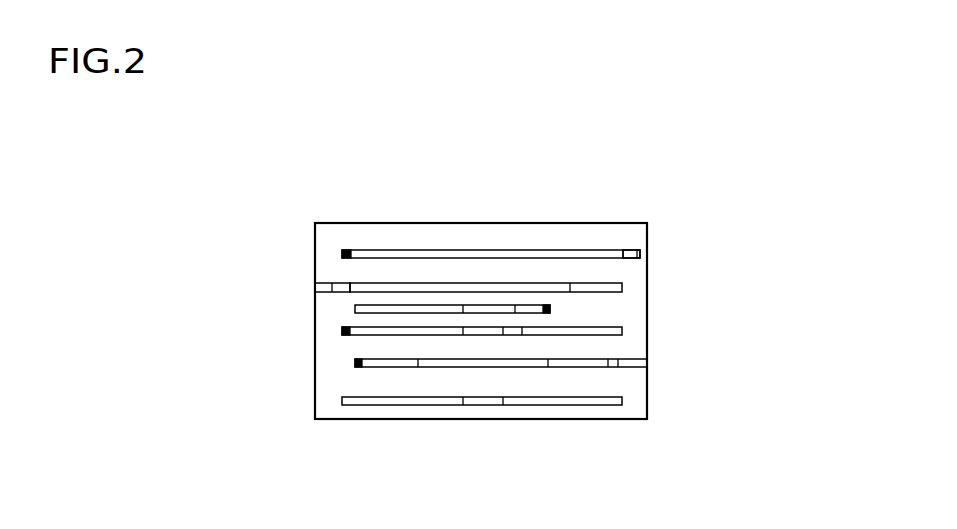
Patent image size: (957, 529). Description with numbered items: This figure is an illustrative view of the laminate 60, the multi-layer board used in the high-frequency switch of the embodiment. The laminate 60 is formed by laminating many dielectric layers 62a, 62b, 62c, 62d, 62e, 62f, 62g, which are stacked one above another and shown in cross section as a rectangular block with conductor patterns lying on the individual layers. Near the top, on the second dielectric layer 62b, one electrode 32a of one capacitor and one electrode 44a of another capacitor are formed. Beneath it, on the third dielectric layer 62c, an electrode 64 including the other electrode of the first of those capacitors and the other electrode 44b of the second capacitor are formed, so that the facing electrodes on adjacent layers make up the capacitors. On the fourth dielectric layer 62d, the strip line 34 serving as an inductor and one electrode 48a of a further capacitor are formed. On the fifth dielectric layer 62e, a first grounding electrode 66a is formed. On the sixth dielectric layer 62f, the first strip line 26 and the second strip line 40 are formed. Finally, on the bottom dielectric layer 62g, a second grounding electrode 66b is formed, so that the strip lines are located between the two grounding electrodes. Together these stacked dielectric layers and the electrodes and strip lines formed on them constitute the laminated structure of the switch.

The laminate 60 is at (336, 168).
The dielectric layer 62a is at (633, 237).
The second dielectric layer 62b is at (620, 271).
The third dielectric layer 62c is at (537, 297).
The fourth dielectric layer 62d is at (578, 348).
The fifth dielectric layer 62e is at (537, 320).
The sixth dielectric layer 62f is at (590, 390).
The bottom dielectric layer 62g is at (617, 411).
The electrode of the capacitor 44 44a is at (343, 253).
The other electrode of the capacitor 44 44b is at (317, 283).
The electrode of the capacitor 32 32a is at (637, 252).
The electrode 64 is at (613, 281).
The strip line 34 is at (355, 307).
The electrode of the capacitor 48 48a is at (550, 304).
The first grounding electrode 66a is at (342, 330).
The first strip line 26 is at (353, 362).
The second strip line 40 is at (550, 367).
The second grounding electrode 66b is at (432, 405).